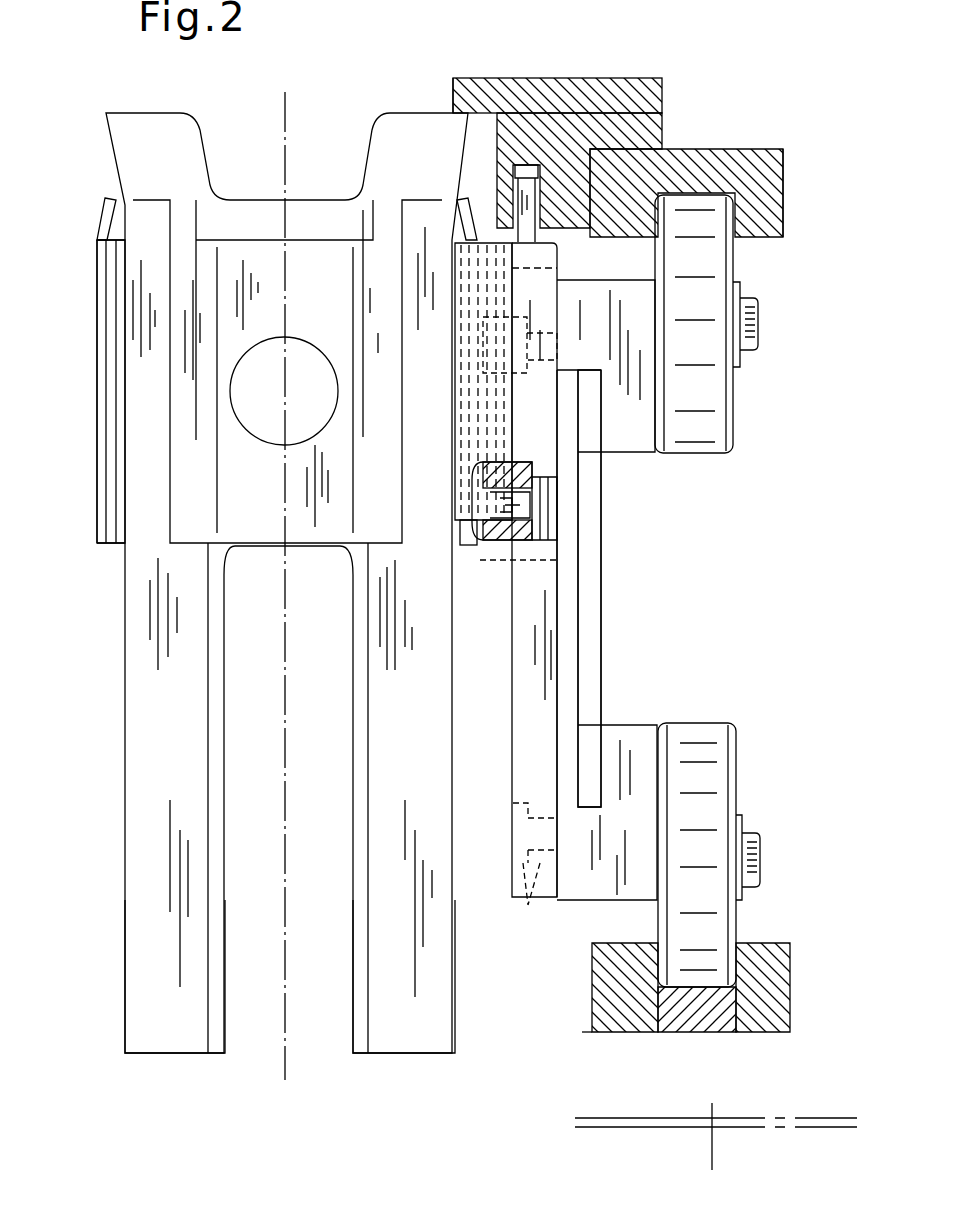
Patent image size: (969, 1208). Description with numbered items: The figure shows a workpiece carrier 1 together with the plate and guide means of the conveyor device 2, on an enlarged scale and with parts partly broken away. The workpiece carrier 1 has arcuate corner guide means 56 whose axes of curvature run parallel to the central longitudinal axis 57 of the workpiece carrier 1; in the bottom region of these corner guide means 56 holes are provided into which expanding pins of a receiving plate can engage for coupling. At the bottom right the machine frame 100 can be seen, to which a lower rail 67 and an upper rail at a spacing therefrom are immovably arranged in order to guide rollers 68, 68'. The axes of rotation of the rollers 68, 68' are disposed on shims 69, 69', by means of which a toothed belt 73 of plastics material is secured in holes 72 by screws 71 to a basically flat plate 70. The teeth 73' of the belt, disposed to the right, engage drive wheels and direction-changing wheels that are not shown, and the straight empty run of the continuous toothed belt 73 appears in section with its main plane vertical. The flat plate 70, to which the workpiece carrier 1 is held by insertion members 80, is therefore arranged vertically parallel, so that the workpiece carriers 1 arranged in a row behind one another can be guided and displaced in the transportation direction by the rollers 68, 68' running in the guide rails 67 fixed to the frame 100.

The workpiece carrier 1 is at (143, 797).
The conveyor device 2 is at (632, 658).
The corner guide means 56 is at (153, 963).
The central longitudinal axis 57 is at (290, 687).
The lower rail 67 is at (767, 177).
The roller 68 is at (748, 855).
The roller 68' is at (750, 324).
The shim 69 is at (608, 786).
The shim 69' is at (629, 393).
The plate 70 is at (515, 765).
The screws 71 is at (492, 372).
The holes 72 is at (543, 309).
The toothed belt 73 is at (633, 588).
The teeth 73' is at (628, 588).
The insertion members 80 is at (193, 433).
The machine frame 100 is at (716, 1120).